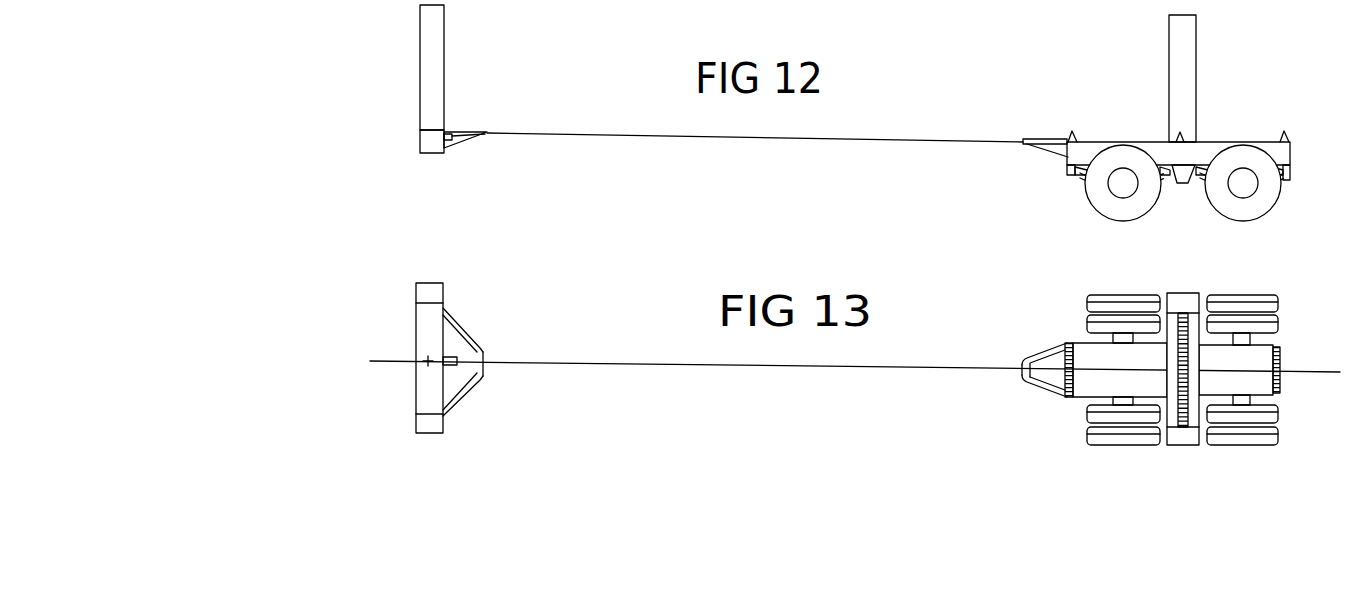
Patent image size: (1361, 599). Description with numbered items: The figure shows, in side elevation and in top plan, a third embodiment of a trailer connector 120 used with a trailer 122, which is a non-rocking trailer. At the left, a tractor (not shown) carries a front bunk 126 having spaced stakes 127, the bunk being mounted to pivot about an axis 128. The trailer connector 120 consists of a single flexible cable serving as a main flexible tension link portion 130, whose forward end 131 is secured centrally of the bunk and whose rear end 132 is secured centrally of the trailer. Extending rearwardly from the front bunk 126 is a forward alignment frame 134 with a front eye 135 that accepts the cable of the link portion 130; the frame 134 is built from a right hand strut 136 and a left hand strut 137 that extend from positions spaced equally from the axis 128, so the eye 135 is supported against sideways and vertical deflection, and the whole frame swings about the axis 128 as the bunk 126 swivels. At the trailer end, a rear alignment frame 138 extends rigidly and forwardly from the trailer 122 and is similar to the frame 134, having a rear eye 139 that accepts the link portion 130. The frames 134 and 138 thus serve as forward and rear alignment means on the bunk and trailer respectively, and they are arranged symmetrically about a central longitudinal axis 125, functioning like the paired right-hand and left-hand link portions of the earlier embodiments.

In FIG. 12, the trailer connector 120 is at (848, 136).
In FIG. 13, the trailer connector 120 is at (882, 358).
In FIG. 12, the trailer 122 is at (1218, 116).
In FIG. 13, the trailer 122 is at (1293, 352).
In FIG. 13, the central longitudinal axis 125 is at (1290, 372).
In FIG. 12, the front bunk 126 is at (438, 135).
In FIG. 13, the front bunk 126 is at (428, 359).
In FIG. 12, the stakes 127 is at (432, 34).
In FIG. 13, the stakes 127 is at (430, 296).
In FIG. 13, the axis 128 is at (427, 364).
In FIG. 12, the main flexible tension link portion 130 is at (683, 139).
In FIG. 13, the main flexible tension link portion 130 is at (825, 367).
In FIG. 13, the forward end 131 is at (453, 359).
In FIG. 12, the rear end 132 is at (1065, 142).
In FIG. 13, the rear end 132 is at (1060, 372).
In FIG. 12, the forward alignment frame 134 is at (458, 144).
In FIG. 13, the forward alignment frame 134 is at (482, 386).
In FIG. 12, the front eye 135 is at (485, 133).
In FIG. 13, the front eye 135 is at (484, 364).
In FIG. 13, the right hand strut 136 is at (457, 322).
In FIG. 13, the left hand strut 137 is at (463, 396).
In FIG. 12, the rear alignment frame 138 is at (1063, 152).
In FIG. 13, the rear alignment frame 138 is at (1048, 344).
In FIG. 13, the rear eye 139 is at (1012, 371).